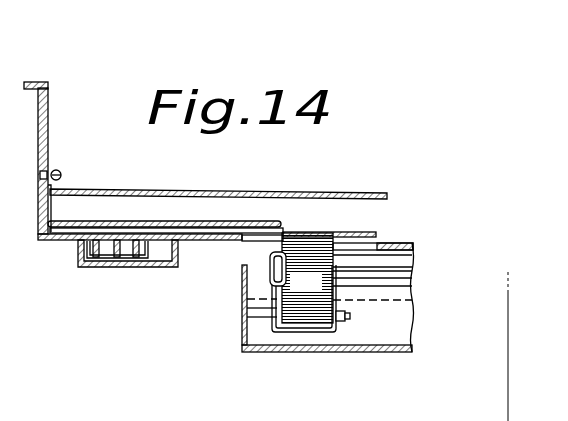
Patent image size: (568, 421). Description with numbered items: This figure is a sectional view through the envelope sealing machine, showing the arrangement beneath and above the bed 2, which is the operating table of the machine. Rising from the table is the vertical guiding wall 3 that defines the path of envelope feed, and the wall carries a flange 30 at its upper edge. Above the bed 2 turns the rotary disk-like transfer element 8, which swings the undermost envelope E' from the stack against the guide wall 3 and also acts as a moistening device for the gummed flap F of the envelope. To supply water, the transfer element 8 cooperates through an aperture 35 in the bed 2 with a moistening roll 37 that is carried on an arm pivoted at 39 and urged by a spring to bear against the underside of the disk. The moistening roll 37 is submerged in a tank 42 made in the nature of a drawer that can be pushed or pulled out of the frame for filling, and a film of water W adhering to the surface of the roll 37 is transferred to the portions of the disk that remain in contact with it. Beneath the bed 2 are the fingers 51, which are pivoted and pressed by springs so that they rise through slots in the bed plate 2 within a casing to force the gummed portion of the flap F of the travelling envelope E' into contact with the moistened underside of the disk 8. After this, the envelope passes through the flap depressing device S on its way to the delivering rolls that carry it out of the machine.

The flange at top of post 30 is at (46, 83).
The vertical guiding wall 3 is at (48, 132).
The undermost envelope E' is at (164, 195).
The bed 2 is at (222, 237).
The flap F is at (68, 241).
The flap depressing device S is at (78, 263).
The fingers 51 is at (136, 258).
The rotary disk-like element 8 is at (366, 233).
The aperture 35 is at (371, 247).
The moistening roll 37 is at (303, 282).
The pivot 39 is at (350, 317).
The tank 42 is at (241, 327).
The film of water W is at (372, 334).